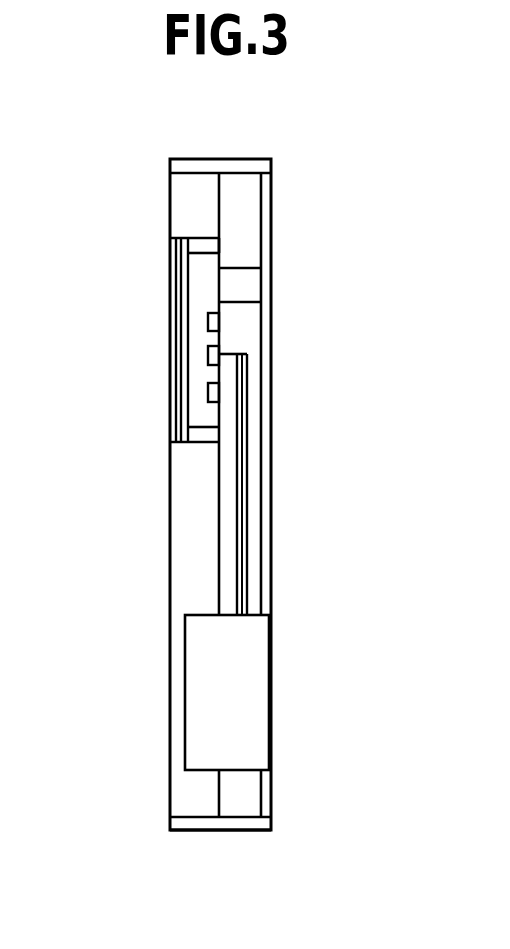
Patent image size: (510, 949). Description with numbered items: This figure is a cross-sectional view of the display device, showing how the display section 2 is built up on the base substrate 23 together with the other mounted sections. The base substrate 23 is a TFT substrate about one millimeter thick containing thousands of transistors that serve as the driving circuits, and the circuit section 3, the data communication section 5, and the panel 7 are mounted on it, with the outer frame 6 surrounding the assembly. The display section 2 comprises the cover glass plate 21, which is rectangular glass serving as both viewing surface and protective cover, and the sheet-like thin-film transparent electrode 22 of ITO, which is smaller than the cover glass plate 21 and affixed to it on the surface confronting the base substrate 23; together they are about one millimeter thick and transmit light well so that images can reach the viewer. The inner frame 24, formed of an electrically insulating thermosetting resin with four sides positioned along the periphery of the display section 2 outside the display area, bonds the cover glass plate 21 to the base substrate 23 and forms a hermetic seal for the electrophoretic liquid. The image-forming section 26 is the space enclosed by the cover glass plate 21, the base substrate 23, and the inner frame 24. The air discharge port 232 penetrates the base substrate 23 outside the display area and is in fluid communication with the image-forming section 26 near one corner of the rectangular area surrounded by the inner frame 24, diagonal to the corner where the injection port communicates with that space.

The display section 2 is at (153, 343).
The cover glass plate 21 is at (170, 305).
The transparent electrode 22 is at (170, 272).
The inner frame 24 is at (213, 240).
The air discharge port 232 is at (245, 263).
The image-forming section 26 is at (193, 370).
The circuit section 3 is at (240, 397).
The base substrate 23 is at (264, 537).
The panel 7 is at (182, 562).
The data communication section 5 is at (272, 692).
The outer frame 6 is at (271, 828).